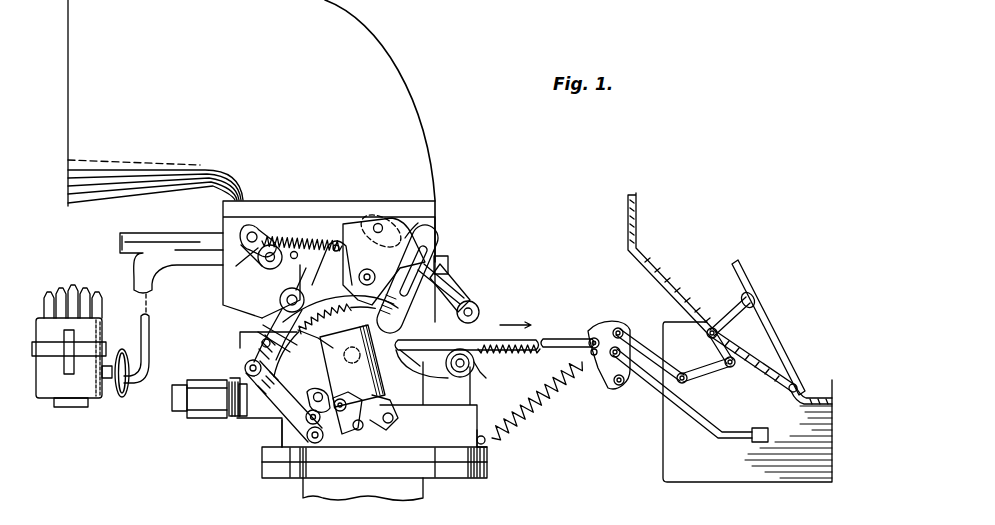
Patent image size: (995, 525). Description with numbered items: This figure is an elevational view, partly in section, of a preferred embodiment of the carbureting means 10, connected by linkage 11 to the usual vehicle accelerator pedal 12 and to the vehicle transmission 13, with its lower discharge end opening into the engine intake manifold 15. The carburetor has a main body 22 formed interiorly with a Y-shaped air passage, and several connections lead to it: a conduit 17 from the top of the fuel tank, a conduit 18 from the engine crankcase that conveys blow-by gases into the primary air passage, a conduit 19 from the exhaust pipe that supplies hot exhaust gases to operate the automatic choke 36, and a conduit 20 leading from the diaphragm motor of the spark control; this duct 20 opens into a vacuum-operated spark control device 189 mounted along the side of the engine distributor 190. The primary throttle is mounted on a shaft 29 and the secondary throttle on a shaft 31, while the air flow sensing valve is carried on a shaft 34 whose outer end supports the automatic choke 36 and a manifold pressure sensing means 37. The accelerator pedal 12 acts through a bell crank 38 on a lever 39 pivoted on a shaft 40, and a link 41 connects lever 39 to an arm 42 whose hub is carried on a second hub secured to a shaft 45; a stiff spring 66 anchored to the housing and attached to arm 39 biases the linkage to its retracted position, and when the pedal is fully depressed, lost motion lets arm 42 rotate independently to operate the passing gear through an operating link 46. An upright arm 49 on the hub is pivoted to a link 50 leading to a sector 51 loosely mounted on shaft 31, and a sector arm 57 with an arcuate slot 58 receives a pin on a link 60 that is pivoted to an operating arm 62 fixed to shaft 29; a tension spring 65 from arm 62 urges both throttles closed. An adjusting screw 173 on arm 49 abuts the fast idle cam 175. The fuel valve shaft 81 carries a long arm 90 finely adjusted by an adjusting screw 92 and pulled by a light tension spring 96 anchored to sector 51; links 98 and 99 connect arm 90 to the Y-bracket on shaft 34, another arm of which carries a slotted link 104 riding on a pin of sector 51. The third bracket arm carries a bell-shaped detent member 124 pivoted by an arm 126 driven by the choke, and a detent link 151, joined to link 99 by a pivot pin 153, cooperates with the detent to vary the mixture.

The carbureting means 10 is at (492, 165).
The linkage 11 is at (626, 315).
The accelerator pedal 12 is at (753, 290).
The vehicle transmission 13 is at (707, 476).
The engine intake manifold 15 is at (424, 484).
The conduit 17 is at (448, 256).
The conduit 18 is at (190, 237).
The conduit 19 is at (182, 404).
The conduit 20 is at (152, 320).
The main body 22 is at (230, 317).
The shaft 29 is at (268, 262).
The shaft 31 is at (367, 270).
The shaft 34 is at (352, 366).
The automatic choke 36 is at (418, 395).
The manifold pressure sensing means 37 is at (315, 347).
The bell crank 38 is at (720, 374).
The lever 39 is at (607, 365).
The shaft 40 is at (621, 384).
The link 41 is at (588, 349).
The arm 42 is at (428, 372).
The shaft 45 is at (487, 379).
The operating link 46 is at (705, 422).
The arm 49 is at (480, 310).
The link 50 is at (458, 294).
The sector 51 is at (420, 222).
The sector arm 57 is at (304, 298).
The arcuate slot 58 is at (342, 214).
The link 60 is at (316, 243).
The operating arm 62 is at (251, 250).
The tension spring 65 is at (287, 240).
The stiff spring 66 is at (529, 404).
The valve shaft 81 is at (300, 271).
The long arm 90 is at (256, 336).
The adjusting screw 92 is at (268, 291).
The light tension spring 96 is at (310, 373).
The link 98 is at (248, 397).
The link 99 is at (307, 395).
The link 104 is at (438, 243).
The detent member 124 is at (368, 430).
The arm 126 is at (372, 404).
The detent link 151 is at (374, 462).
The pivot pin 153 is at (303, 421).
The adjusting screw 173 is at (516, 352).
The fast idle cam 175 is at (450, 280).
The vacuum-operated spark control device 189 is at (120, 398).
The engine distributor 190 is at (56, 398).